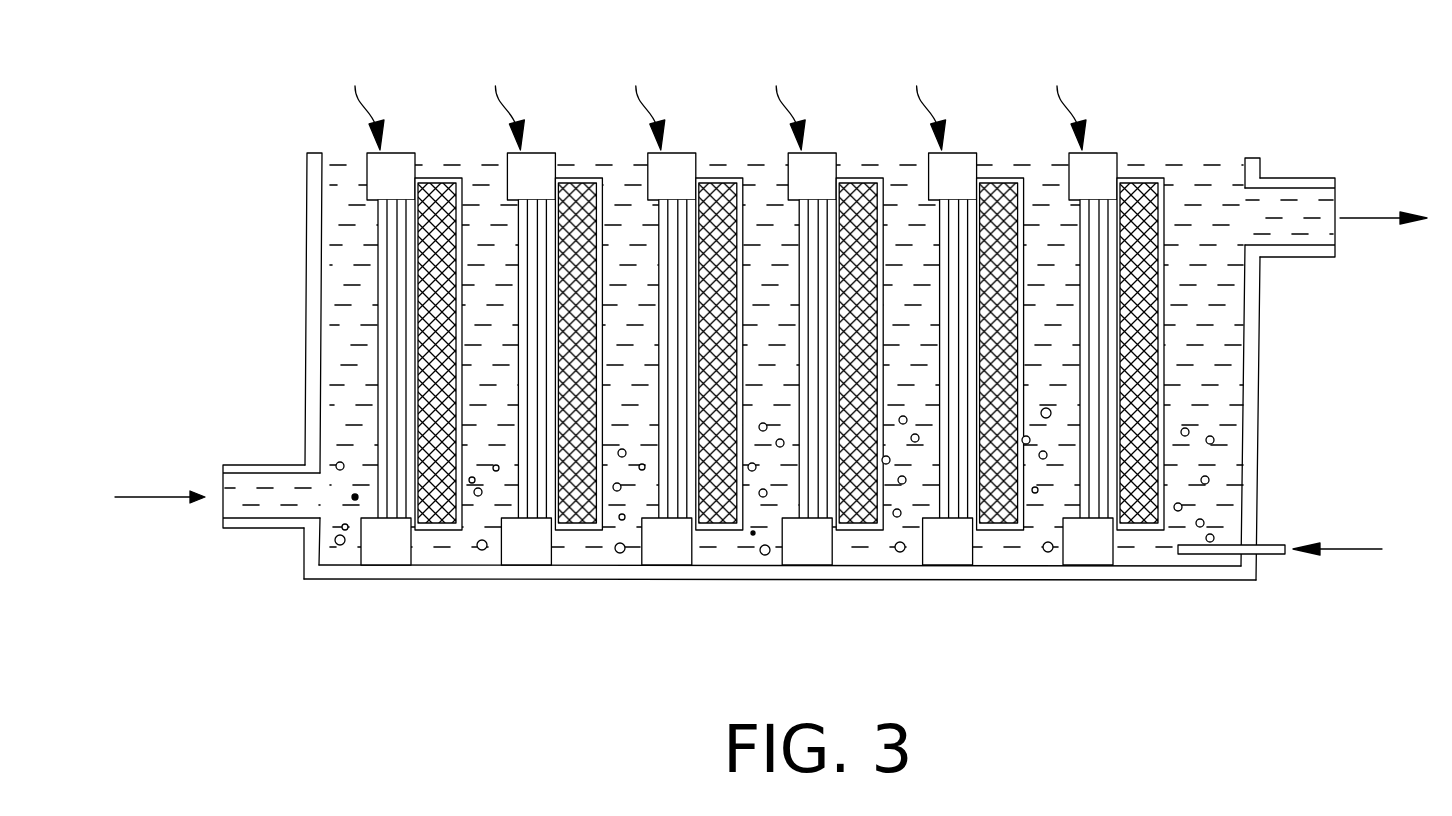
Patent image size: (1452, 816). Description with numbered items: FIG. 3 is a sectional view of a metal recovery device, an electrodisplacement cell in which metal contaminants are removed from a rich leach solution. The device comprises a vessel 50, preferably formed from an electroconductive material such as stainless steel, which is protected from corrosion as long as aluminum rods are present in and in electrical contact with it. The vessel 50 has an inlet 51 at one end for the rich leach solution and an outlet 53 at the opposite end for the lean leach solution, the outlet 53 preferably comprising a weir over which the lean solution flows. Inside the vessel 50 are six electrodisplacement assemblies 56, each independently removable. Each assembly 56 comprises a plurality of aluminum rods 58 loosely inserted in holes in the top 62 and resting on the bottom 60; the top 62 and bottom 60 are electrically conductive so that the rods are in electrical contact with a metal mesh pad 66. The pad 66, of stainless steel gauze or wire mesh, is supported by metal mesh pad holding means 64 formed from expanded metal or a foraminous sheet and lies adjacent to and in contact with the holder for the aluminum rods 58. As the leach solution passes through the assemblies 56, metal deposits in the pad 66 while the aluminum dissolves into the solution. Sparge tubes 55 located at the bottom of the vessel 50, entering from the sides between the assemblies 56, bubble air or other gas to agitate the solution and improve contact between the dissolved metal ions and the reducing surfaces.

The vessel 50 is at (306, 272).
The inlet 51 is at (266, 530).
The outlet 53 is at (1283, 178).
The sparge tubes 55 is at (340, 546).
The electrodisplacement assembly 56 is at (713, 100).
The aluminum rods 58 is at (376, 352).
The bottom 60 is at (390, 553).
The top 62 is at (400, 153).
The metal mesh pad holding means 64 is at (437, 532).
The metal mesh pad 66 is at (447, 250).